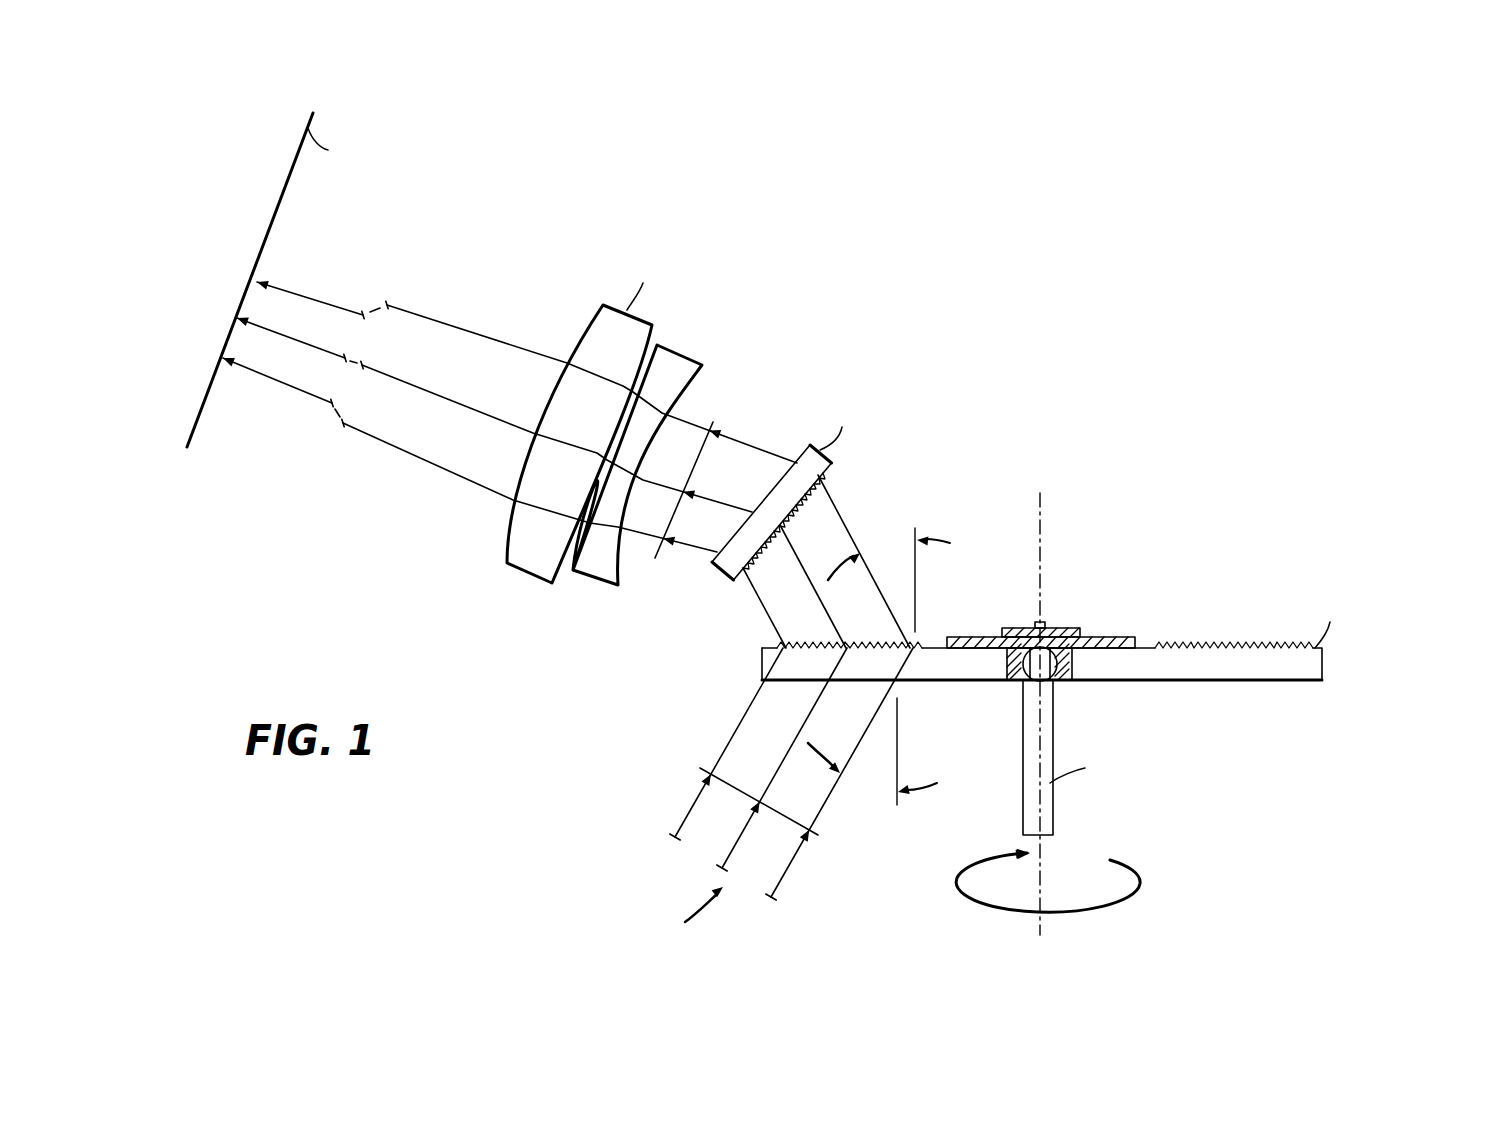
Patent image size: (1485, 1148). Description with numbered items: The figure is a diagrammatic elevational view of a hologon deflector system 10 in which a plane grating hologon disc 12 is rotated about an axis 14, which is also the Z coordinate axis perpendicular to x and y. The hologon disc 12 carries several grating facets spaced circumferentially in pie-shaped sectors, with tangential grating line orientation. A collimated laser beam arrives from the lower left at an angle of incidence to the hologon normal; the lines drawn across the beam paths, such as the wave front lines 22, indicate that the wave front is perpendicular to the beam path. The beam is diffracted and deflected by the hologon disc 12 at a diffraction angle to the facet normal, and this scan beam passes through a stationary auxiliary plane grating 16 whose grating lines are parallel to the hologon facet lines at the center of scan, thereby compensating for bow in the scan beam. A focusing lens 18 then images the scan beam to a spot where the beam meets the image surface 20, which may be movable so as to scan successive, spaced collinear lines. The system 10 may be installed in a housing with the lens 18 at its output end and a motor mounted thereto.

The hologon deflector system 10 is at (1168, 404).
The plane grating hologon disc 12 is at (1325, 675).
The axis 14 is at (1043, 552).
The auxiliary plane grating 16 is at (800, 460).
The focusing lens 18 is at (688, 313).
The image surface 20 is at (280, 214).
The wave front lines 22 is at (710, 763).